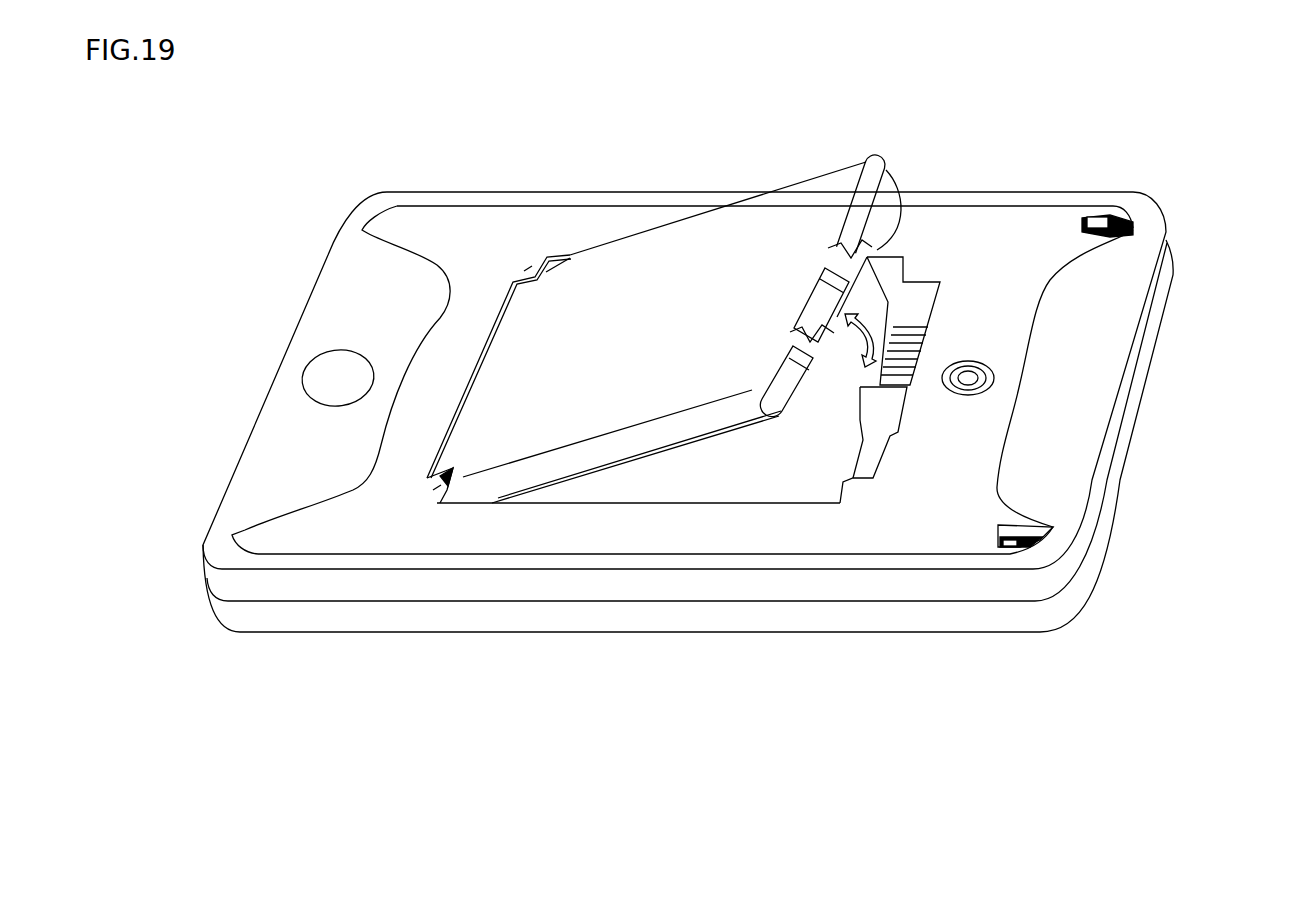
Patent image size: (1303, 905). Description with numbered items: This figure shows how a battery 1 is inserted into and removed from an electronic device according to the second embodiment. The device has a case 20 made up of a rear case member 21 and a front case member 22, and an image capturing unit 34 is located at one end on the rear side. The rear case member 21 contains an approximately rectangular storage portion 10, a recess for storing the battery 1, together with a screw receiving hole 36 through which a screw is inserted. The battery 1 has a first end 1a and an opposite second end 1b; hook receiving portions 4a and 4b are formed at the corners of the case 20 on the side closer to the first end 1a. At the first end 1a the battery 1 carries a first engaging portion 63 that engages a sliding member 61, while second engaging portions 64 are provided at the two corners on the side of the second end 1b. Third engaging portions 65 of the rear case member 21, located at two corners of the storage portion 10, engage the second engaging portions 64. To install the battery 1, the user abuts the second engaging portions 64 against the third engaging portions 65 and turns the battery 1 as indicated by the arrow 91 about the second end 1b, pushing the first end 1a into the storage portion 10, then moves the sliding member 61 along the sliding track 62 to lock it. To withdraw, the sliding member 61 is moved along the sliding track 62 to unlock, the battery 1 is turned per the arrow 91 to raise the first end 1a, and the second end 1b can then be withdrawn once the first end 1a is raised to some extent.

The battery 1 is at (795, 222).
The first end 1a is at (875, 163).
The second end 1b is at (470, 377).
The hook receiving portion 4a is at (1027, 527).
The hook receiving portion 4b is at (1097, 222).
The storage portion 10 is at (682, 488).
The case 20 is at (731, 436).
The rear case member 21 is at (1145, 330).
The front case member 22 is at (1223, 318).
The image capturing unit 34 is at (303, 373).
The screw receiving hole 36 is at (970, 360).
The sliding member 61 is at (893, 392).
The sliding track 62 is at (938, 283).
The first engaging portion 63 is at (877, 248).
The second engaging portion 64 is at (570, 257).
The third engaging portion 65 is at (528, 268).
The arrow 91 is at (875, 330).